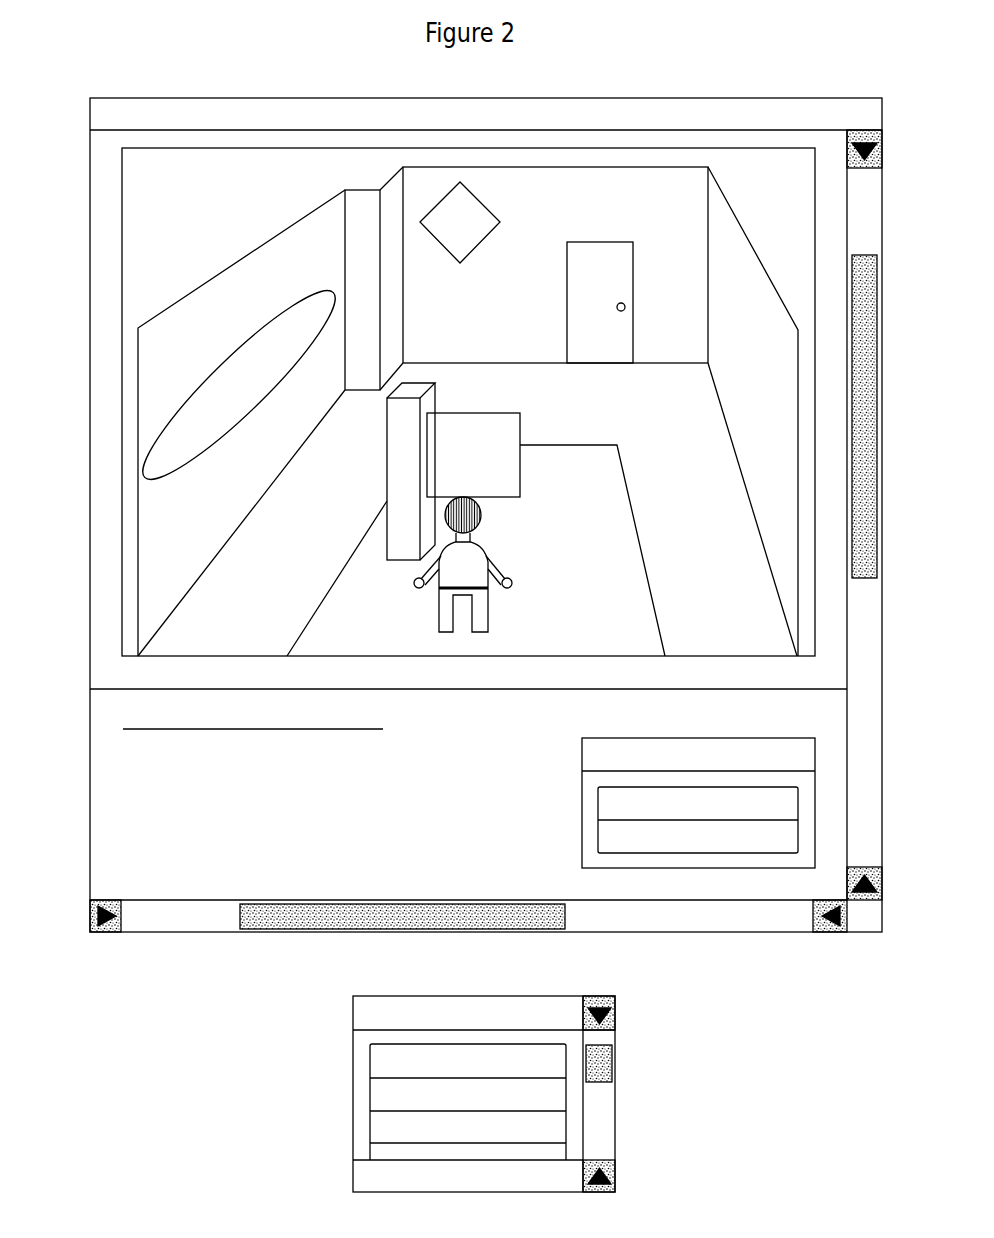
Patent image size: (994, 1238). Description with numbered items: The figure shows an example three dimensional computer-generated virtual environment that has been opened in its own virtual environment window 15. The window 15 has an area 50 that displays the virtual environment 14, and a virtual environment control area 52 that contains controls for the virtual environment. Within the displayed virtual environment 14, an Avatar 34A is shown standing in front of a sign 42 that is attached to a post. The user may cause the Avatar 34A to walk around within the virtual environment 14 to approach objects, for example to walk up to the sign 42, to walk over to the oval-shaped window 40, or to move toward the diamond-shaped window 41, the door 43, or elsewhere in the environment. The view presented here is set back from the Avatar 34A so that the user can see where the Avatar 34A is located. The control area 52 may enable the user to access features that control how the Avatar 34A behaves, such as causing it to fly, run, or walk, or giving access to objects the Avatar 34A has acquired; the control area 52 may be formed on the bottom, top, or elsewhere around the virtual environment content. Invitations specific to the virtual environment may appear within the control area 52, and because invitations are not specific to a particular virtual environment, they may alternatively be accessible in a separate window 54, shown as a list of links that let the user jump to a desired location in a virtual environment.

The virtual environment window 15 is at (587, 95).
The area 50 is at (105, 370).
The virtual environment 14 is at (183, 176).
The oval-shaped window 40 is at (232, 346).
The diamond-shaped window 41 is at (470, 232).
The door 43 is at (610, 284).
The sign 42 is at (486, 462).
The Avatar 34A is at (502, 605).
The virtual environment control area 52 is at (103, 803).
The separate window 54 is at (353, 1062).